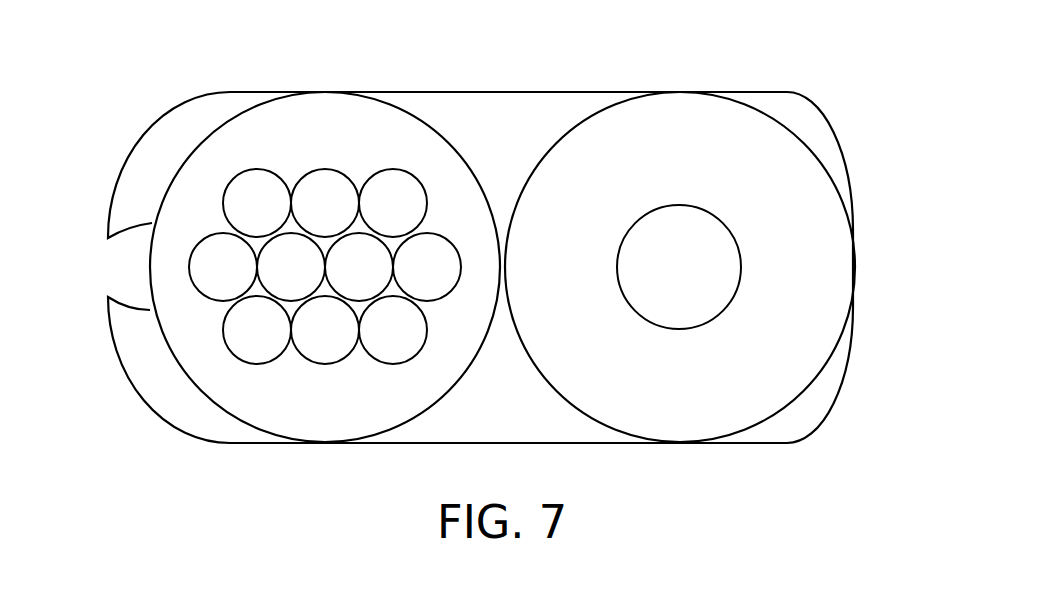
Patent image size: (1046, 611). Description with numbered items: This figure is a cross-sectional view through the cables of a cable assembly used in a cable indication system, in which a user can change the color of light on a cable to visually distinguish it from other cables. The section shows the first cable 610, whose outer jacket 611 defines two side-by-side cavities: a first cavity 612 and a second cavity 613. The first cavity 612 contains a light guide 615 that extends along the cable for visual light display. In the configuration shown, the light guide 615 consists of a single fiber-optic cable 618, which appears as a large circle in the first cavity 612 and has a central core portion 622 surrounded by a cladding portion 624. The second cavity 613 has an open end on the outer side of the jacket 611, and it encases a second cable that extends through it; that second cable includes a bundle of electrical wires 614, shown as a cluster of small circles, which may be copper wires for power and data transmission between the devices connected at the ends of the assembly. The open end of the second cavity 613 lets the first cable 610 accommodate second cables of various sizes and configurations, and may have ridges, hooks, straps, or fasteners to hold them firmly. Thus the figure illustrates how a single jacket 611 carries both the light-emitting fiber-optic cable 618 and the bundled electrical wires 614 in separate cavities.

The first cable 610 is at (481, 268).
The jacket 611 is at (505, 103).
The first cavity 612 is at (680, 235).
The second cavity 613 is at (325, 235).
The electrical wire 614 is at (324, 200).
The light guide 615 is at (679, 434).
The fiber-optic cable 618 is at (778, 147).
The core portion 622 is at (699, 283).
The cladding portion 624 is at (837, 283).